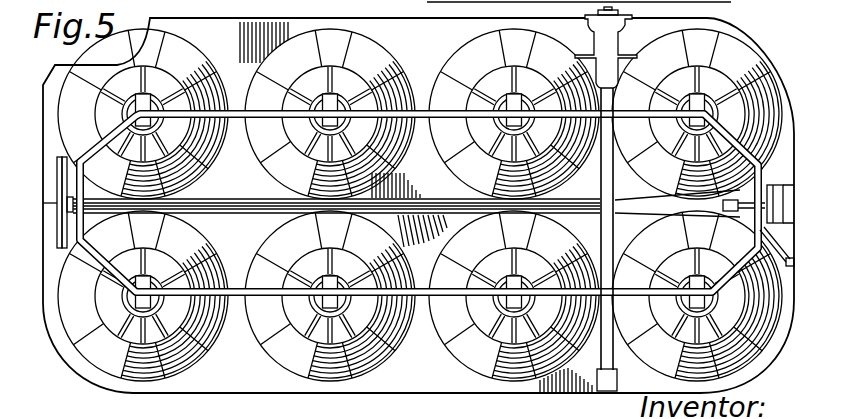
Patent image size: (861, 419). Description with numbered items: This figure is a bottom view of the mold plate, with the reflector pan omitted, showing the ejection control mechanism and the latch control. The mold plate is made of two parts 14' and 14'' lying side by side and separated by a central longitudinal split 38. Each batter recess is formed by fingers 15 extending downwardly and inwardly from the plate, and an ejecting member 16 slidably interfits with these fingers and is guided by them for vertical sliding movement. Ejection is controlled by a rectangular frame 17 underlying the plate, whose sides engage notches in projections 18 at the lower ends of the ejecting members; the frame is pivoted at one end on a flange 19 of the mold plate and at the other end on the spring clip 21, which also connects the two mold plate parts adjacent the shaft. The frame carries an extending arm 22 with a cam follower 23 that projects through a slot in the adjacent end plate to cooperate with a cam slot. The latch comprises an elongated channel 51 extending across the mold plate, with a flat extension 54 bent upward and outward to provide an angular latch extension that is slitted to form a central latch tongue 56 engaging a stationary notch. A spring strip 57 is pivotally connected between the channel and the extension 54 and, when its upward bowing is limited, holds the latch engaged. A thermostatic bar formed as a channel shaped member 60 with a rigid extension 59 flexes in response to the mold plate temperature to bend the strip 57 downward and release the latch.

The mold plate part 14' is at (416, 401).
The mold plate part 14'' is at (418, 197).
The fingers 15 is at (342, 45).
The ejecting member 16 is at (370, 58).
The rectangular frame 17 is at (232, 128).
The projections 18 is at (148, 98).
The flange 19 is at (768, 189).
The suspension support / spring clip 21 is at (50, 236).
The extending arm 22 is at (775, 242).
The cam follower 23 is at (790, 262).
The central longitudinal split 38 is at (57, 203).
The elongated channel 51 is at (612, 153).
The flat extension 54 is at (612, 34).
The central latch tongue 56 is at (619, 13).
The spring strip 57 is at (608, 225).
The extension 59 is at (572, 200).
The channel shaped member 60 is at (251, 222).